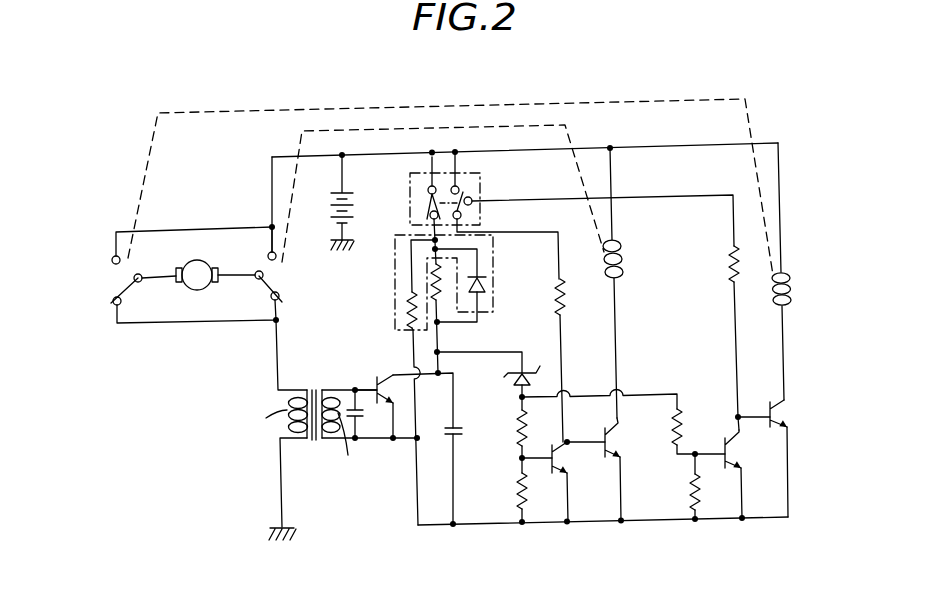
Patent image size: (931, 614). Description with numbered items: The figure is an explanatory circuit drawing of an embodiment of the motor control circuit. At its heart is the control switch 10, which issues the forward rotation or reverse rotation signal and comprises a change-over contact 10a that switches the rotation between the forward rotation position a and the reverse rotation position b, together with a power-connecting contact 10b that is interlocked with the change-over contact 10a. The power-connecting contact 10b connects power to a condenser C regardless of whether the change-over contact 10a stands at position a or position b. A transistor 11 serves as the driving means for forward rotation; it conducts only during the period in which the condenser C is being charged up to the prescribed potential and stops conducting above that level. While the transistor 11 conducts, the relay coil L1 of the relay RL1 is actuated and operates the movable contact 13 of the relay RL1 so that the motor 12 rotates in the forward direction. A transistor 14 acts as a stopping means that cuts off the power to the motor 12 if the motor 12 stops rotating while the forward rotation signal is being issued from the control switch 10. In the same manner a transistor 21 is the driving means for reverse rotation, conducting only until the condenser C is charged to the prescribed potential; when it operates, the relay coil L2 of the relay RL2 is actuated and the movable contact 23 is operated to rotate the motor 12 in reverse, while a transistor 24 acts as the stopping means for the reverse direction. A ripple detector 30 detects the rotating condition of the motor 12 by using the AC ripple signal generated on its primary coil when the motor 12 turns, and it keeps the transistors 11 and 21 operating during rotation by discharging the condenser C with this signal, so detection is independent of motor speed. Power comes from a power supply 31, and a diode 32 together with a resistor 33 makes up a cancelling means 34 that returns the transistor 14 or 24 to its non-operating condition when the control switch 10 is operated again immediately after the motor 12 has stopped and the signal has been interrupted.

The control switch 10 is at (441, 152).
The change-over contact 10a is at (486, 193).
The power-connecting contact 10b is at (427, 204).
The forward rotation position a is at (461, 221).
The reverse rotation position b is at (473, 200).
The transistor 11 is at (620, 443).
The motor 12 is at (197, 292).
The movable contact 13 is at (284, 296).
The transistor 14 is at (568, 460).
The transistor 21 is at (785, 413).
The movable contact 23 is at (108, 302).
The transistor 24 is at (740, 456).
The ripple detector 30 is at (313, 443).
The power supply 31 is at (355, 205).
The diode 32 is at (486, 285).
The resistor 33 is at (408, 313).
The cancelling means 34 is at (441, 294).
The condenser C is at (461, 429).
The relay coil L1 is at (622, 257).
The relay coil L2 is at (787, 288).
The relay RL1 is at (393, 131).
The relay RL2 is at (540, 103).